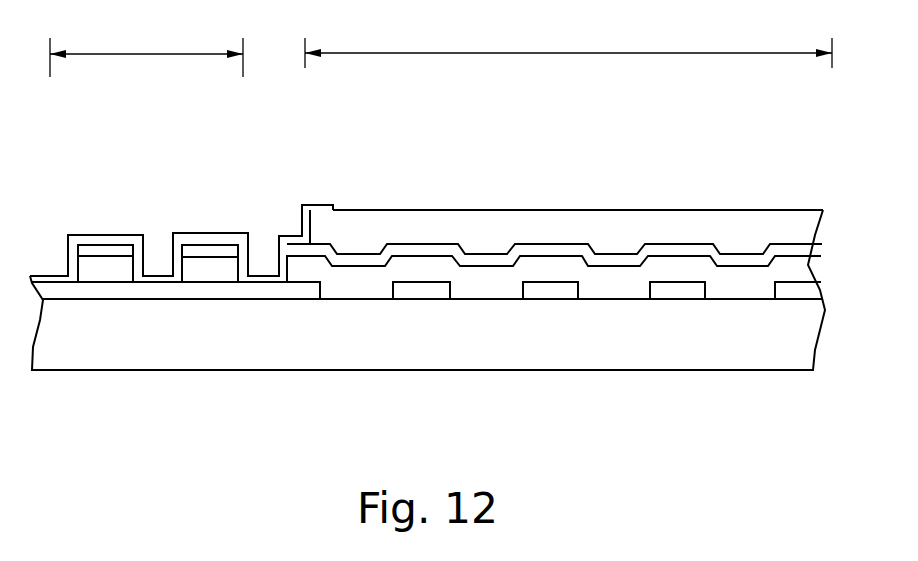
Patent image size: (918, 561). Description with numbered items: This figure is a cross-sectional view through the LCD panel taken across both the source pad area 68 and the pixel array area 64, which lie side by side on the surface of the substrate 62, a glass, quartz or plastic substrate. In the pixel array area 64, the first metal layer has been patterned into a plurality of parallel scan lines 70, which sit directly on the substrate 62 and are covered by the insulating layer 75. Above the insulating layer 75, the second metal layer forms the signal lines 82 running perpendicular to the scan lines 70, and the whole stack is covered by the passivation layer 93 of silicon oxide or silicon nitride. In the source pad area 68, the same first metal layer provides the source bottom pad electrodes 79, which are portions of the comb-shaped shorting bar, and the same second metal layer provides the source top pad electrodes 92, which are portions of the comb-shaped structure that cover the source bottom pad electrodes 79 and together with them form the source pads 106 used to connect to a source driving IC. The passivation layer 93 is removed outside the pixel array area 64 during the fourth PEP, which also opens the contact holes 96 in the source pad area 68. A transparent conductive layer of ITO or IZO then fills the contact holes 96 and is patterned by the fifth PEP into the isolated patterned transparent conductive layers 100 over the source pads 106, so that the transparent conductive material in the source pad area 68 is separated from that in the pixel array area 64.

The substrate 62 is at (448, 347).
The pixel array area 64 is at (568, 42).
The source pad area 68 is at (146, 48).
The scan lines 70 is at (607, 321).
The insulating layer 75 is at (457, 277).
The source bottom pad electrodes 79 is at (176, 322).
The signal lines 82 is at (590, 249).
The source top pad electrodes 92 is at (158, 230).
The passivation layer 93 is at (613, 210).
The contact holes 96 is at (261, 232).
The patterned transparent conductive layers 100 is at (315, 189).
The source pads 106 is at (106, 138).